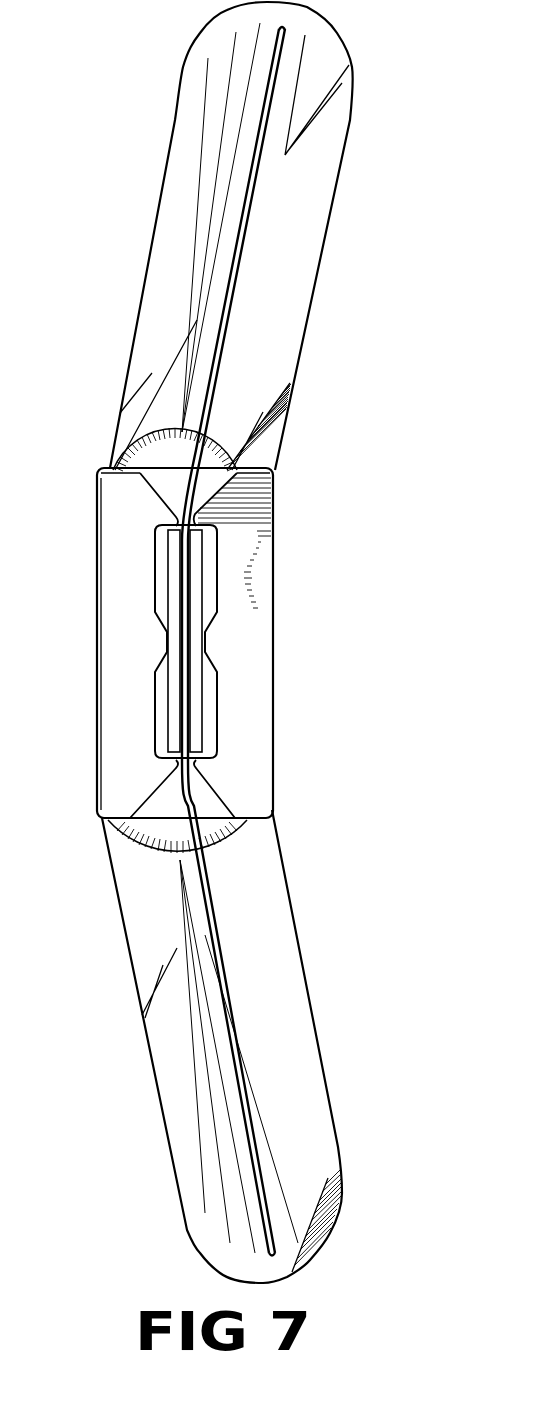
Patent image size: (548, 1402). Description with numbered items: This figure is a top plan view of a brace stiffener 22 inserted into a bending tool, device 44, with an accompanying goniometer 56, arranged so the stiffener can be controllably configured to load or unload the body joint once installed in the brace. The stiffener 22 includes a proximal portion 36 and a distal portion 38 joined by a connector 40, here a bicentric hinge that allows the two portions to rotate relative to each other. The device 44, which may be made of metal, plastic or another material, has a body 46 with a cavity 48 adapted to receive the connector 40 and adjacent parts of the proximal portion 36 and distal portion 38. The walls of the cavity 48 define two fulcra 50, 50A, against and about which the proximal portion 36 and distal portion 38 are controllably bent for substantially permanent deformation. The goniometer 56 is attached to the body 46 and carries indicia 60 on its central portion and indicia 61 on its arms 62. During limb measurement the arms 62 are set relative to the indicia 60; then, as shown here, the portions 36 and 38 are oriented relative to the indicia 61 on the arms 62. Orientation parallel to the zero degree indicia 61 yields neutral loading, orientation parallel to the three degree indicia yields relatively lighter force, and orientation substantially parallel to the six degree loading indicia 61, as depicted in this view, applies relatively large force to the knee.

The stiffener 22 is at (255, 168).
The proximal portion 36 is at (267, 97).
The distal portion 38 is at (257, 1160).
The connector 40 is at (177, 595).
The device 44 is at (97, 669).
The body 46 is at (112, 757).
The cavity 48 is at (207, 703).
The fulcrum 50 is at (197, 518).
The fulcrum 50A is at (195, 768).
The goniometer 56 is at (305, 916).
The indicia 60 is at (140, 443).
The indicia 61 is at (200, 182).
The arms 62 is at (280, 318).